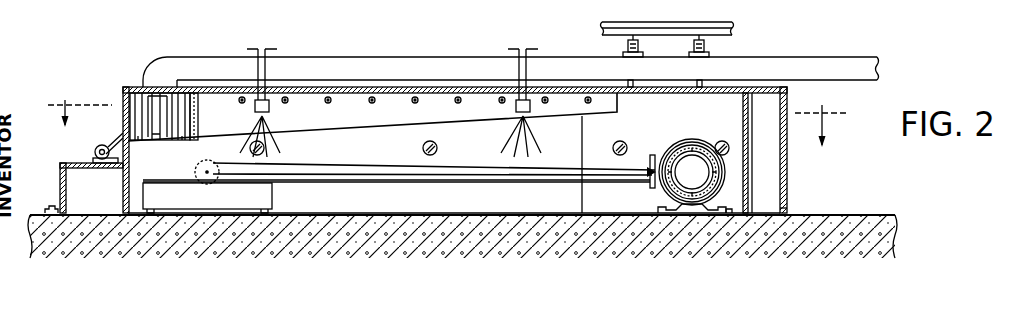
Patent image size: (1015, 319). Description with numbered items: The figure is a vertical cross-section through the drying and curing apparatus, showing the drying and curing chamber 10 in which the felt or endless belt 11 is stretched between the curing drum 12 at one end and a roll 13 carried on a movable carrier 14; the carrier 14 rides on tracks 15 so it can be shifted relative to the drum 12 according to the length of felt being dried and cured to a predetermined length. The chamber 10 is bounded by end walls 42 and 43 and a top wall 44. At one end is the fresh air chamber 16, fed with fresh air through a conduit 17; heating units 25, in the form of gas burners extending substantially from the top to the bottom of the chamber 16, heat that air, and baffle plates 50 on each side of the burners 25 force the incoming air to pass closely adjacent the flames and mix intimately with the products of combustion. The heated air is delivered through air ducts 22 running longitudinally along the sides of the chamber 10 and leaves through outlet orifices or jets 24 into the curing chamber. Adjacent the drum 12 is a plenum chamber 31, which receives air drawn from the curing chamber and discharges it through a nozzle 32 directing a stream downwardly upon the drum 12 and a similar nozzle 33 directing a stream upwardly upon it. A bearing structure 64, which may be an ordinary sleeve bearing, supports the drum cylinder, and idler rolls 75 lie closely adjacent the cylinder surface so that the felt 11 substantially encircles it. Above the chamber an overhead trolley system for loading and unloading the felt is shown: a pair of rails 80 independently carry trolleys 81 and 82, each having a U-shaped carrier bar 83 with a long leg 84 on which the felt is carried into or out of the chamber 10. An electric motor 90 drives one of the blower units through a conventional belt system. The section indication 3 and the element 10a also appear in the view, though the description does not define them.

The section line 3- 3 is at (447, 113).
The drying and curing chamber 10 is at (469, 84).
The spray nozzle 10a is at (269, 108).
The felt or endless belt 11 is at (521, 167).
The curing drum 12 is at (683, 136).
The roll 13 is at (196, 165).
The movable carrier 14 is at (272, 197).
The tracks 15 is at (446, 213).
The fresh air chamber 16 is at (200, 108).
The conduit 17 is at (303, 63).
The air ducts 22 is at (322, 128).
The outlet orifices or jets 24 is at (375, 102).
The heating units 25 is at (158, 115).
The plenum chamber 31 is at (770, 159).
The nozzle 32 is at (746, 130).
The nozzle 33 is at (745, 211).
The end wall 42 is at (125, 96).
The end wall 43 is at (784, 212).
The top wall 44 is at (447, 88).
The baffle plates 50 is at (180, 134).
The bearing structure 64 is at (682, 207).
The idler rolls 75 is at (648, 174).
The rails 80 is at (692, 44).
The trolley 81 is at (710, 56).
The trolley 82 is at (622, 52).
The U-shaped carrier bar 83 is at (702, 86).
The long leg 84 is at (631, 81).
The electric motor 90 is at (96, 152).